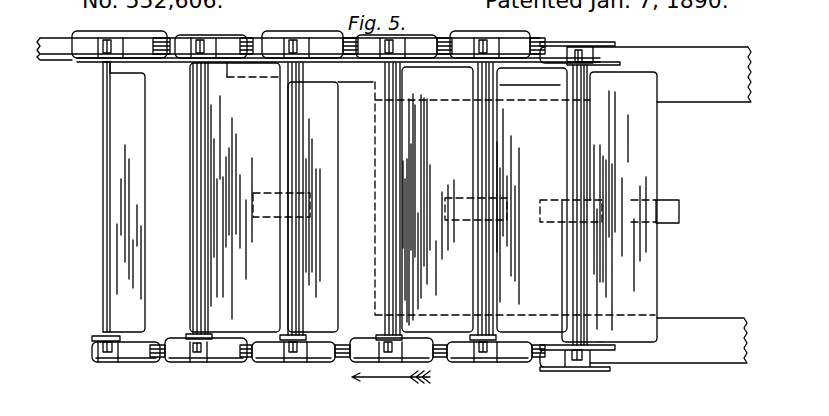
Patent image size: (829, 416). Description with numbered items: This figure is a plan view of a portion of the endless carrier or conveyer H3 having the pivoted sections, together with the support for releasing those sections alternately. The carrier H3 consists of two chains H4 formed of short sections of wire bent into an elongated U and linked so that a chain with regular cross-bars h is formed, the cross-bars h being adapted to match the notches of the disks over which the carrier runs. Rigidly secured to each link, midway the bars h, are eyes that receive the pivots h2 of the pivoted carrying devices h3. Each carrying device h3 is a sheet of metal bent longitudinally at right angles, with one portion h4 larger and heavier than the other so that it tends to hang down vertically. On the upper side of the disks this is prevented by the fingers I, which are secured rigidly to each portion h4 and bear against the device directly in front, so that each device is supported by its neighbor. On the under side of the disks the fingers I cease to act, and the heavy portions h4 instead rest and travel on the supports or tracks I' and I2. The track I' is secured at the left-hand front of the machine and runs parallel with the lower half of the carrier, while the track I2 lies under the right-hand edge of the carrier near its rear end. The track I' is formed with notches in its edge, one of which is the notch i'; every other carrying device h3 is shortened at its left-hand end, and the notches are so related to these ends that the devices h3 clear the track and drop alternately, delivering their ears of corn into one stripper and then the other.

The track I' is at (408, 54).
The track I2 is at (705, 306).
The notch i' is at (336, 184).
The cross-bars h is at (338, 50).
The pivots h2 is at (480, 52).
The pivoted carrying devices h3 is at (658, 140).
The heavier portion h4 is at (642, 248).
The fingers I is at (485, 201).
The endless carrier or conveyer H3 is at (508, 38).
The chains H4 is at (607, 42).